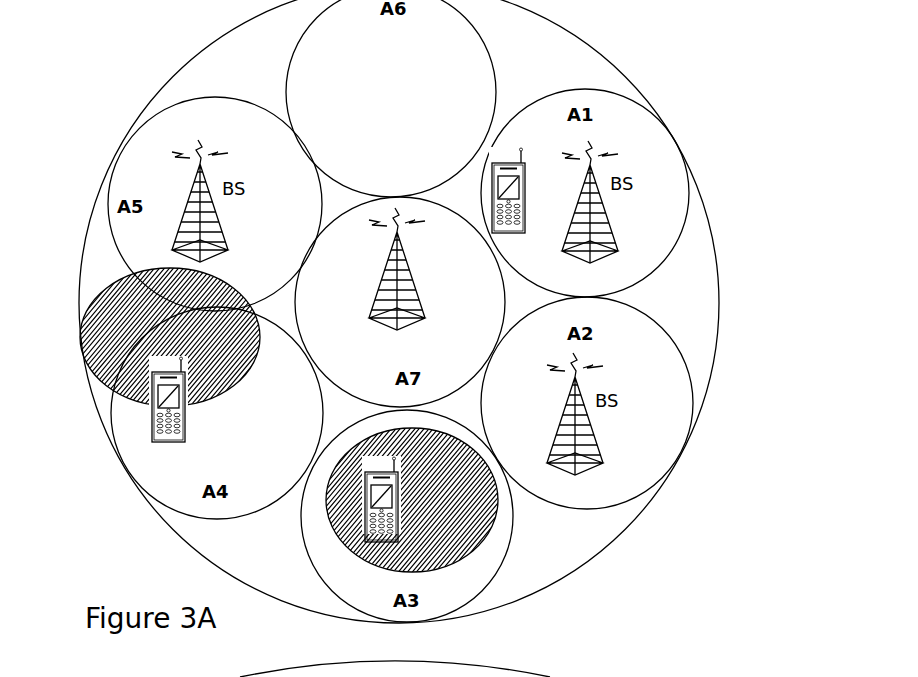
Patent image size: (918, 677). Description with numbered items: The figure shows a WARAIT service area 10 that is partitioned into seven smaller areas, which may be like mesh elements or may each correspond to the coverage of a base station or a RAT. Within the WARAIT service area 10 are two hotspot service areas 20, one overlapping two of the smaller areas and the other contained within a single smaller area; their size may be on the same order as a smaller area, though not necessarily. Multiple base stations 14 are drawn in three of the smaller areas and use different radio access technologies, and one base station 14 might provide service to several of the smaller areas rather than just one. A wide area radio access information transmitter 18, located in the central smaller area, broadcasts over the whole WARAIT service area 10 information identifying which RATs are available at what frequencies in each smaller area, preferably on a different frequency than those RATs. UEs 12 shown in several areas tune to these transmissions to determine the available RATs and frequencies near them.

The WARAIT service area 10 is at (571, 30).
The UE 12 is at (185, 425).
The base station 14 is at (222, 233).
The wide area radio access information transmitter 18 is at (413, 277).
The hotspot service area 20 is at (115, 325).